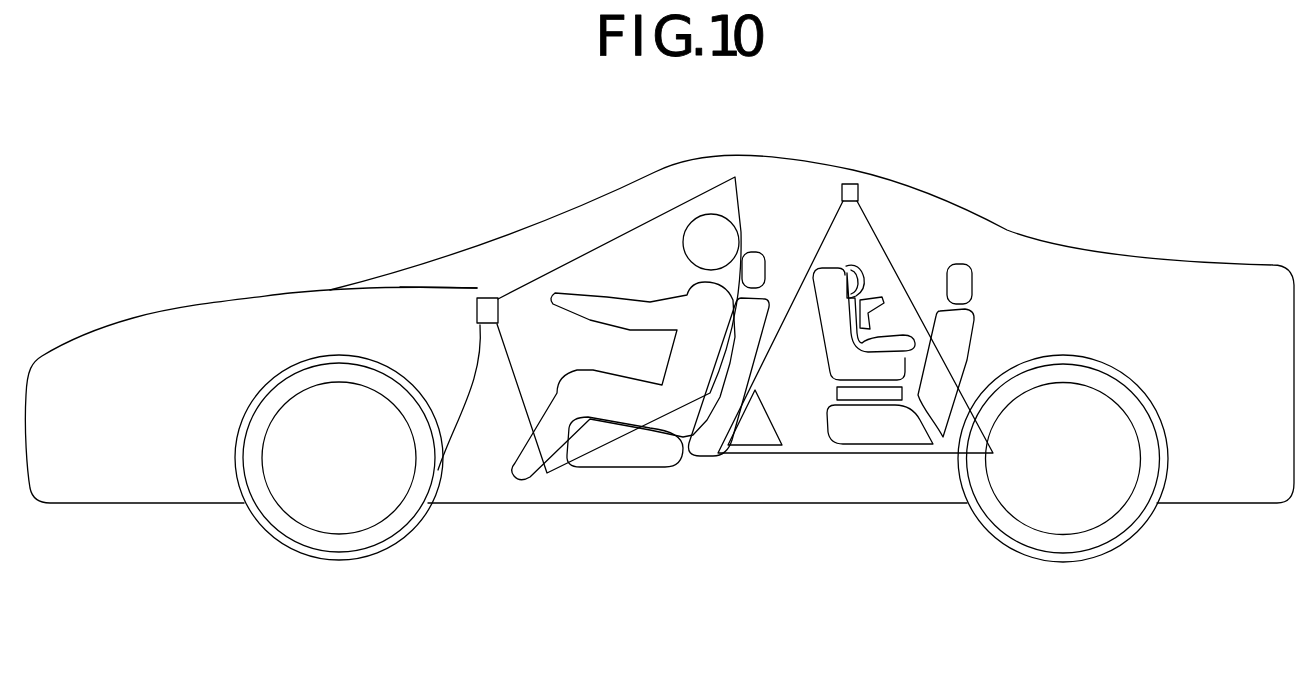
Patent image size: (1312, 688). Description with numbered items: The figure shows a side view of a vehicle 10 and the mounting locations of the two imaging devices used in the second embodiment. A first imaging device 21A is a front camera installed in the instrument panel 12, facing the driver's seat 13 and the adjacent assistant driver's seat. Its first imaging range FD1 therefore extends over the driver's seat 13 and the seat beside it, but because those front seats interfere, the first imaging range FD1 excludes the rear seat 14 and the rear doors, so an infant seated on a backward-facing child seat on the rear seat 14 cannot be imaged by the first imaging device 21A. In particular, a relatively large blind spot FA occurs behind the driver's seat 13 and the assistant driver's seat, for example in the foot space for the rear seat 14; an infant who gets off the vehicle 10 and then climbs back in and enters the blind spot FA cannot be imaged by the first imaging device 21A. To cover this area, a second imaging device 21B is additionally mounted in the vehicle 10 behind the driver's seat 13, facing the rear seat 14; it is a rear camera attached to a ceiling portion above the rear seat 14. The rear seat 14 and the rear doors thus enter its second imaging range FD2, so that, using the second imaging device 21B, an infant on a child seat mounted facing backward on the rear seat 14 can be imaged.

The vehicle 10 is at (320, 293).
The instrument panel 12 is at (479, 297).
The first imaging device 21A is at (488, 297).
The first imaging range FD1 is at (607, 245).
The driver's seat 13 is at (758, 268).
The second imaging device 21B is at (853, 183).
The second imaging range FD2 is at (880, 232).
The blind spot FA is at (757, 447).
The rear seat 14 is at (972, 264).